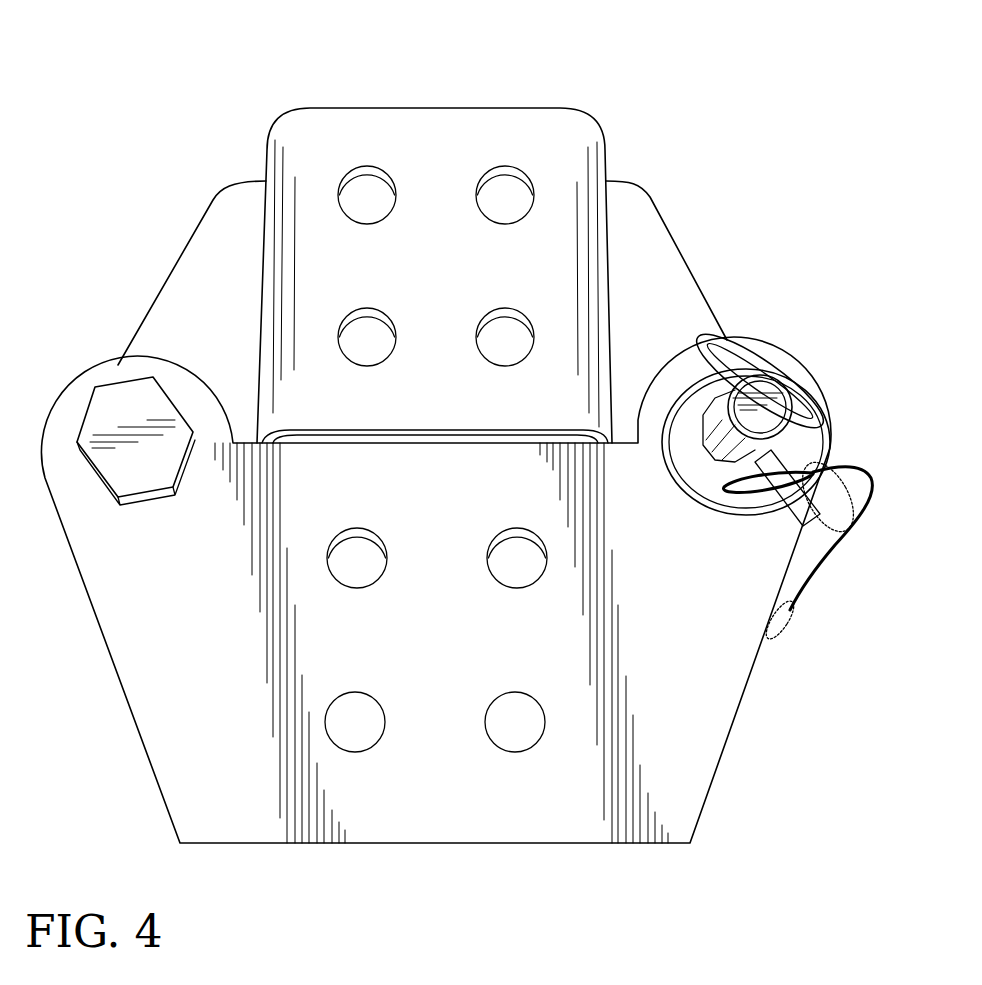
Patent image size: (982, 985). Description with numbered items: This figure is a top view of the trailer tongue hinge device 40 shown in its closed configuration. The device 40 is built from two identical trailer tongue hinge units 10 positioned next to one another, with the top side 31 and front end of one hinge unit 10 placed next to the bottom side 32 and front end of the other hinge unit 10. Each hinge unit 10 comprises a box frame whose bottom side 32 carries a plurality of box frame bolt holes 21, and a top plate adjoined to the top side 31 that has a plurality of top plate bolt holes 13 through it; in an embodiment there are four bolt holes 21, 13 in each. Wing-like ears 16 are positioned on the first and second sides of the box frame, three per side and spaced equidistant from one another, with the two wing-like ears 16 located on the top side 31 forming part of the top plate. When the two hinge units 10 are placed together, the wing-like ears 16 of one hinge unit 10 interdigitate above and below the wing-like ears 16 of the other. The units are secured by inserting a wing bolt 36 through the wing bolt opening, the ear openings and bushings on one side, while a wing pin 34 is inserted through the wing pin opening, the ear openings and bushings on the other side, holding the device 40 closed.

The trailer tongue hinge device 40 is at (148, 92).
The trailer tongue hinge unit 10 is at (328, 88).
The bottom side 32 is at (477, 108).
The top side 31 is at (500, 845).
The box frame bolt holes 21 is at (357, 333).
The top plate bolt holes 13 is at (343, 562).
The wing-like ears 16 is at (115, 368).
The wing bolt 36 is at (110, 472).
The wing pin 34 is at (805, 437).